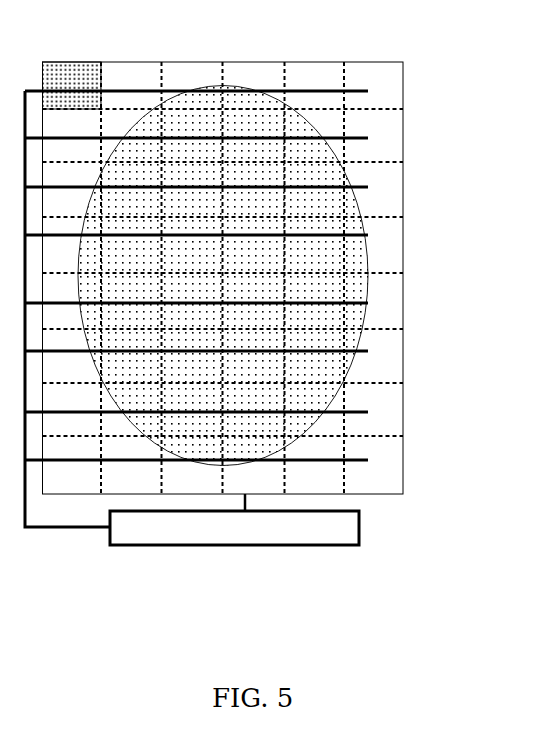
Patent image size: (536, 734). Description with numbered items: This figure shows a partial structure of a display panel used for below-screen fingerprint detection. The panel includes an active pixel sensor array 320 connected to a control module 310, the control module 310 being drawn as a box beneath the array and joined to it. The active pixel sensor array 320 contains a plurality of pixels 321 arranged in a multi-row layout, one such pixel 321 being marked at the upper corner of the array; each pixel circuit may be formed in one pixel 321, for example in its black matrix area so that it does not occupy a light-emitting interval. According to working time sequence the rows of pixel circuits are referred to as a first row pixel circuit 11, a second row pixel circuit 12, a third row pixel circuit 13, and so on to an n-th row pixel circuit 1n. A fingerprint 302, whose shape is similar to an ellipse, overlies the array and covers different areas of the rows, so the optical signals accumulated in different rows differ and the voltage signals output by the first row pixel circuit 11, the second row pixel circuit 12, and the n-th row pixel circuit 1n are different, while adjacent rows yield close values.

The first row pixel circuit 11 is at (403, 91).
The second row pixel circuit 12 is at (403, 140).
The third row pixel circuit 13 is at (403, 193).
The n-th row pixel circuit 1n is at (403, 468).
The fingerprint 302 is at (335, 275).
The control module 310 is at (238, 533).
The active pixel sensor array 320 is at (260, 270).
The pixel 321 is at (67, 68).